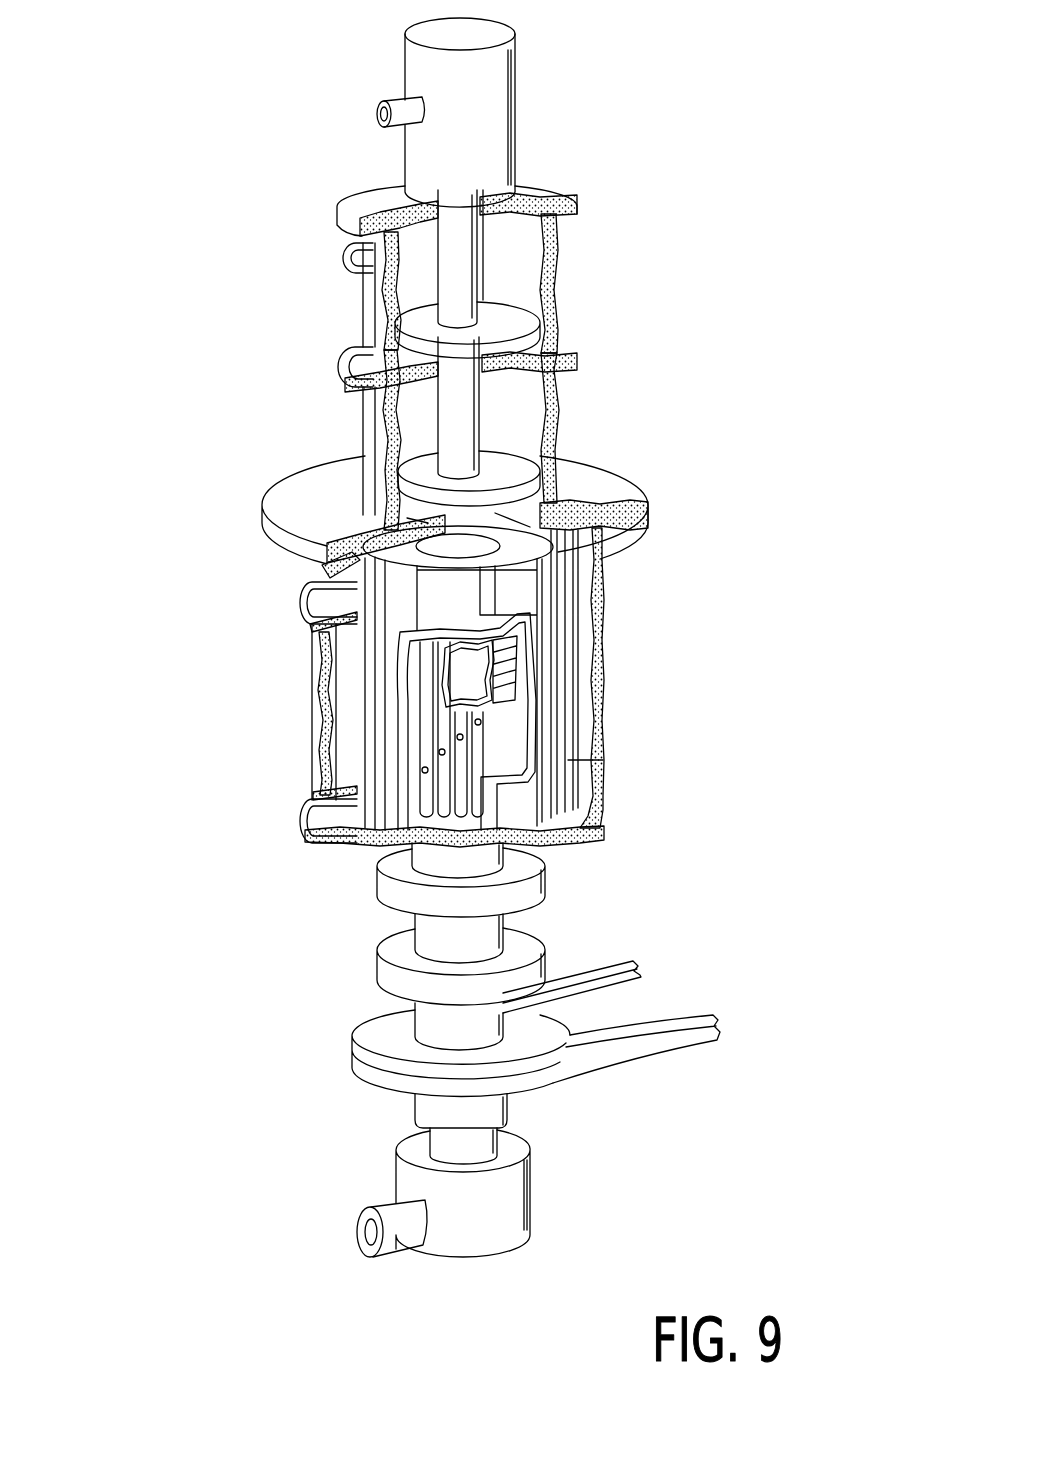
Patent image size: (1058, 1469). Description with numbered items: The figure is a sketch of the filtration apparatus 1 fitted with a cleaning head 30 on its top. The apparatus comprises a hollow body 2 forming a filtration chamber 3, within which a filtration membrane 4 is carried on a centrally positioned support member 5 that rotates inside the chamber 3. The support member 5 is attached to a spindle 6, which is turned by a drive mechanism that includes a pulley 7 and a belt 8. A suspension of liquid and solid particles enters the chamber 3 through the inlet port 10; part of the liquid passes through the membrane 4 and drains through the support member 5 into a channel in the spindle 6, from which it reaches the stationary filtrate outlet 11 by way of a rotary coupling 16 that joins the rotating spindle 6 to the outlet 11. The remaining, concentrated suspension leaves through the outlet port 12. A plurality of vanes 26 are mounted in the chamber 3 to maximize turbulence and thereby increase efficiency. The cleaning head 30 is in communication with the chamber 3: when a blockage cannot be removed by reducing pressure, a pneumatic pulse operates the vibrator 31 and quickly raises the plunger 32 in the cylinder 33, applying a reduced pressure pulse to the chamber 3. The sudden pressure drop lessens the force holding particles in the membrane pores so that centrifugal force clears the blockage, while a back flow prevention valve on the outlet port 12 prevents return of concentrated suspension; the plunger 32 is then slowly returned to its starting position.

The filtration apparatus 1 is at (265, 452).
The hollow body 2 is at (601, 568).
The filtration chamber 3 is at (583, 796).
The filtration membrane 4 is at (583, 597).
The support member 5 is at (497, 711).
The spindle 6 is at (483, 855).
The pulley 7 is at (573, 1029).
The belt 8 is at (627, 1057).
The inlet port 10 is at (290, 826).
The filtrate outlet 11 is at (403, 1217).
The outlet port 12 is at (292, 608).
The rotary coupling 16 is at (503, 1210).
The vanes 26 is at (540, 793).
The cleaning head 30 is at (612, 147).
The vibrator 31 is at (497, 93).
The plunger 32 is at (556, 428).
The cylinder 33 is at (555, 284).